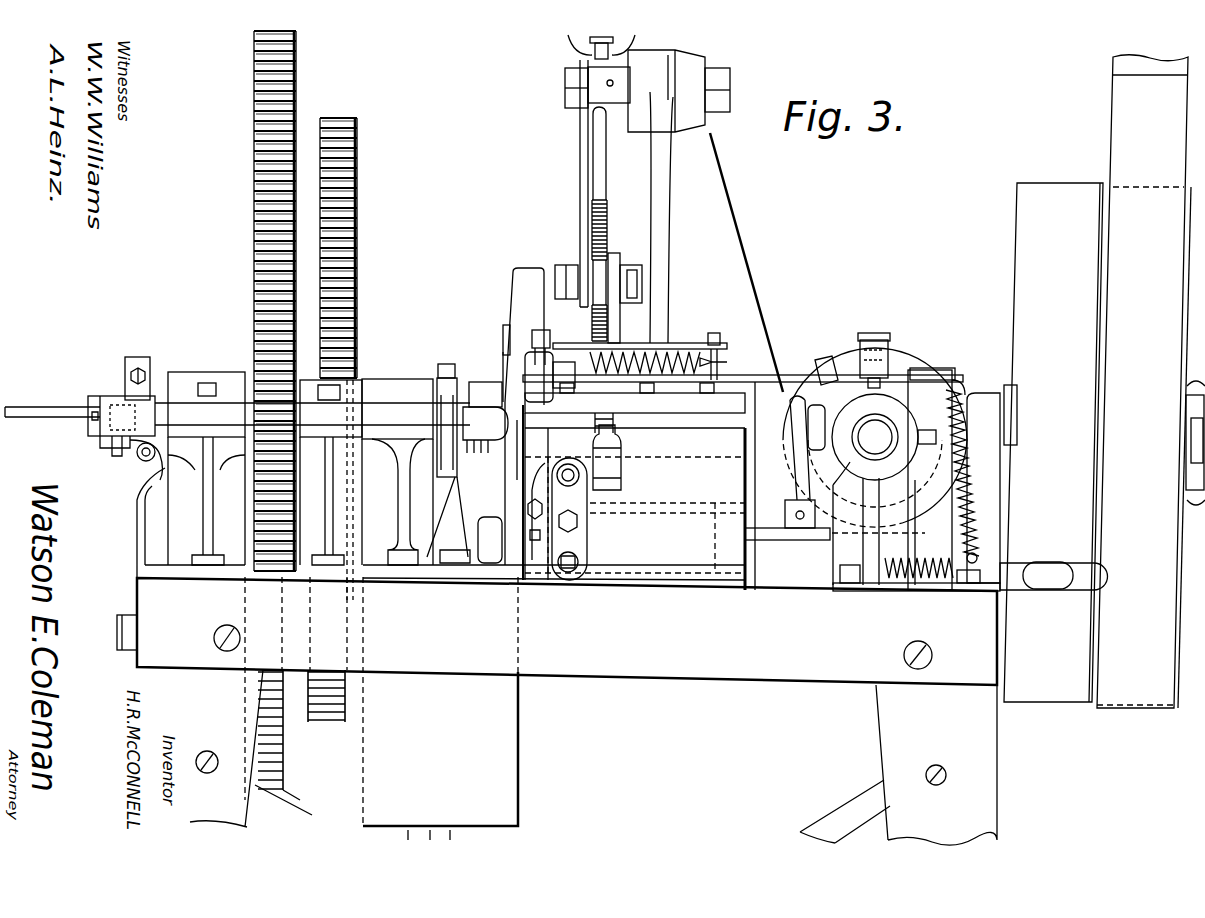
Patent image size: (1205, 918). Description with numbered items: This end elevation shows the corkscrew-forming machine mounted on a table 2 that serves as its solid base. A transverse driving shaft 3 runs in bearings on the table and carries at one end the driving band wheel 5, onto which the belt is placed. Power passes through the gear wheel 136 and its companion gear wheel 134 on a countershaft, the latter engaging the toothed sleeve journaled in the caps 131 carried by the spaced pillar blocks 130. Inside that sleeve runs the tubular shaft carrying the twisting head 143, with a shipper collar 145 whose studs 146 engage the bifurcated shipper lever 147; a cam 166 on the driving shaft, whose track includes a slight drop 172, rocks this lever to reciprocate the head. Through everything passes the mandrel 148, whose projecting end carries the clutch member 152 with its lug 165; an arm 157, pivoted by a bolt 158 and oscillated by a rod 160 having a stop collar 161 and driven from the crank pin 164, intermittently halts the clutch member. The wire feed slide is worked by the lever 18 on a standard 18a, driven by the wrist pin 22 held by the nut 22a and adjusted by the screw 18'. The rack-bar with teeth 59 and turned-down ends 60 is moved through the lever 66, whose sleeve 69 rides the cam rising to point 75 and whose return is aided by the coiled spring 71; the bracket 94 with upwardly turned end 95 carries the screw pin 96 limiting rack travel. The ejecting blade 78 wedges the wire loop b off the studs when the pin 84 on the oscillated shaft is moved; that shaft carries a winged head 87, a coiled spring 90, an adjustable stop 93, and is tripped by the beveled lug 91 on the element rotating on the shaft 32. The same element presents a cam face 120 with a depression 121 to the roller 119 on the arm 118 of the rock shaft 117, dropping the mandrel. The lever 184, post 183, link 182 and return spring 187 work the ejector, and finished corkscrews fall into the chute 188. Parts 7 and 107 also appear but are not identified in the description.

The table 2 is at (567, 705).
The driving shaft 3 is at (1197, 455).
The driving band wheel 5 is at (1175, 373).
The frame box 7 is at (1045, 443).
The lever 18 is at (584, 171).
The screw 18' is at (616, 224).
The standard 18a is at (752, 248).
The wrist pin 22 is at (562, 270).
The nut 22a is at (566, 265).
The shaft 32 is at (875, 437).
The teeth 59 is at (640, 486).
The downwardly turned ends 60 is at (621, 468).
The lever 66 is at (787, 533).
The sleeve 69 is at (905, 531).
The coiled spring 71 is at (920, 567).
The point of cam face 75 is at (932, 397).
The ejecting blade 78 is at (547, 358).
The projecting pin 84 is at (528, 325).
The head 87 is at (940, 372).
The coiled spring 90 is at (962, 484).
The beveled faced lug 91 is at (822, 372).
The adjustable stop 93 is at (962, 392).
The bracket 94 is at (588, 510).
The upwardly turned end 95 is at (590, 497).
The screw pin 96 is at (570, 464).
The bolt 107 is at (548, 484).
The rock shaft 117 is at (752, 513).
The arm 118 is at (795, 478).
The roller 119 is at (818, 413).
The cam face 120 is at (903, 352).
The depression 121 is at (837, 467).
The pillar blocks 130 is at (227, 473).
The caps 131 is at (180, 375).
The gear wheel 134 is at (253, 180).
The gear wheel 136 is at (360, 175).
The twisting head 143 is at (485, 445).
The shipper collar 145 is at (445, 425).
The studs 146 is at (457, 368).
The shipper lever 147 is at (464, 520).
The mandrel 148 is at (40, 416).
The clutch member 152 is at (100, 400).
The arm 157 is at (133, 540).
The bolt 158 is at (115, 640).
The rod 160 is at (140, 460).
The stop collar 161 is at (146, 468).
The crank pin 164 is at (133, 357).
The lug 165 is at (143, 395).
The cam 166 is at (512, 293).
The drop 172 is at (506, 338).
The link 182 is at (670, 343).
The post 183 is at (722, 338).
The lever 184 is at (715, 395).
The spring 187 is at (700, 356).
The chute 188 is at (515, 770).
The wire loop b is at (513, 397).